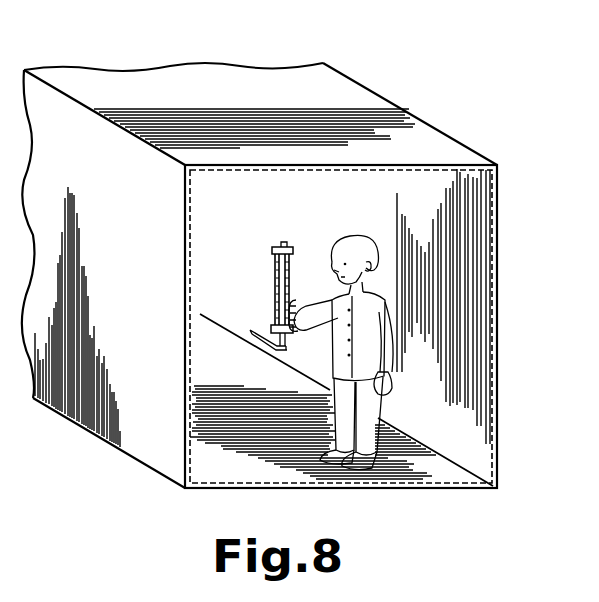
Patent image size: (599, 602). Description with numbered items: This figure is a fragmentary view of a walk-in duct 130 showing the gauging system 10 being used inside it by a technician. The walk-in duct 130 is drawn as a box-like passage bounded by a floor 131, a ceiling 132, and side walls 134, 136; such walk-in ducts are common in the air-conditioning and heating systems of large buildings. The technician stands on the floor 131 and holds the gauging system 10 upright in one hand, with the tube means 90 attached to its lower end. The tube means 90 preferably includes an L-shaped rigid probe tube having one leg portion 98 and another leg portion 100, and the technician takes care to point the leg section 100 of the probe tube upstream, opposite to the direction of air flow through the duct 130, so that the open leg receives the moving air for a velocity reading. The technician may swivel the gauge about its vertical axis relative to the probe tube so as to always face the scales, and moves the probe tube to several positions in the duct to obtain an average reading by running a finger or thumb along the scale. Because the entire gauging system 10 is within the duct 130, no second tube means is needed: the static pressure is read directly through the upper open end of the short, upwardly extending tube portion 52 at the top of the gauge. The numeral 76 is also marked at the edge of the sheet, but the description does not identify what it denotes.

The part 76 is at (0, 11).
The gauging system 10 is at (266, 269).
The tube portion 52 is at (284, 245).
The first tube means 90 is at (276, 355).
The leg portion 98 is at (288, 337).
The leg portion 100 is at (256, 336).
The walk-in duct 130 is at (384, 93).
The floor 131 is at (437, 478).
The ceiling 132 is at (246, 106).
The side wall 134 is at (128, 247).
The side wall 136 is at (433, 200).